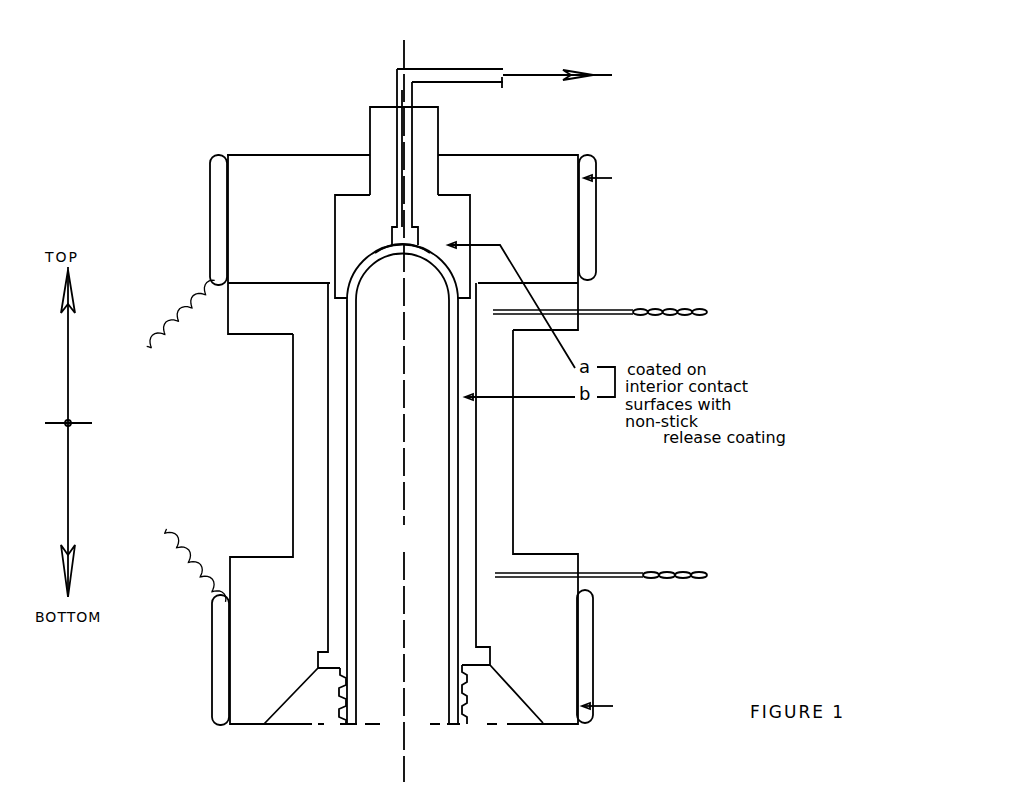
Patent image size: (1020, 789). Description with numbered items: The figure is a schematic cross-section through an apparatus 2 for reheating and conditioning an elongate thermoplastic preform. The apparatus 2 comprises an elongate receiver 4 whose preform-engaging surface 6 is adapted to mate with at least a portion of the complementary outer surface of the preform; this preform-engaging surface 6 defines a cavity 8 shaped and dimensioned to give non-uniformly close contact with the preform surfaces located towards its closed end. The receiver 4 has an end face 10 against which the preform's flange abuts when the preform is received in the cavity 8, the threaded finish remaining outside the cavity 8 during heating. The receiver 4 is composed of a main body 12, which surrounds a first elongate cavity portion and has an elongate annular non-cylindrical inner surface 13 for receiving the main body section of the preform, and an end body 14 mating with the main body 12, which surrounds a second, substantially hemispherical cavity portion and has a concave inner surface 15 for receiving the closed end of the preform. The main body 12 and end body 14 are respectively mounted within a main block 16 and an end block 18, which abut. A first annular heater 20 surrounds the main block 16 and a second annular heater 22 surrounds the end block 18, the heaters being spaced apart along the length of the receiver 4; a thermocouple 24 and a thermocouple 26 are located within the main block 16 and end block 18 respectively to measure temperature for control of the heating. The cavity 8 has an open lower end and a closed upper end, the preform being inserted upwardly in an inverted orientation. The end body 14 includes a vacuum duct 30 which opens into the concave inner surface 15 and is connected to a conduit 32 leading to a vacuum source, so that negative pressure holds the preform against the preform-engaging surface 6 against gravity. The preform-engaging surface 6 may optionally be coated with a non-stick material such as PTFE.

The apparatus 2 is at (202, 122).
The elongate receiver 4 is at (213, 355).
The preform-engaging surface 6 is at (460, 470).
The cavity 8 is at (404, 411).
The end face 10 is at (323, 670).
The main body 12 is at (333, 400).
The annular non-cylindrical inner surface 13 is at (347, 427).
The end body 14 is at (353, 262).
The concave inner surface 15 is at (377, 248).
The main block 16 is at (253, 626).
The end block 18 is at (247, 198).
The first annular heater 20 is at (220, 667).
The second annular heater 22 is at (218, 233).
The thermocouple 24 is at (700, 566).
The thermocouple 26 is at (700, 305).
The vacuum duct 30 is at (403, 148).
The conduit 32 is at (442, 70).